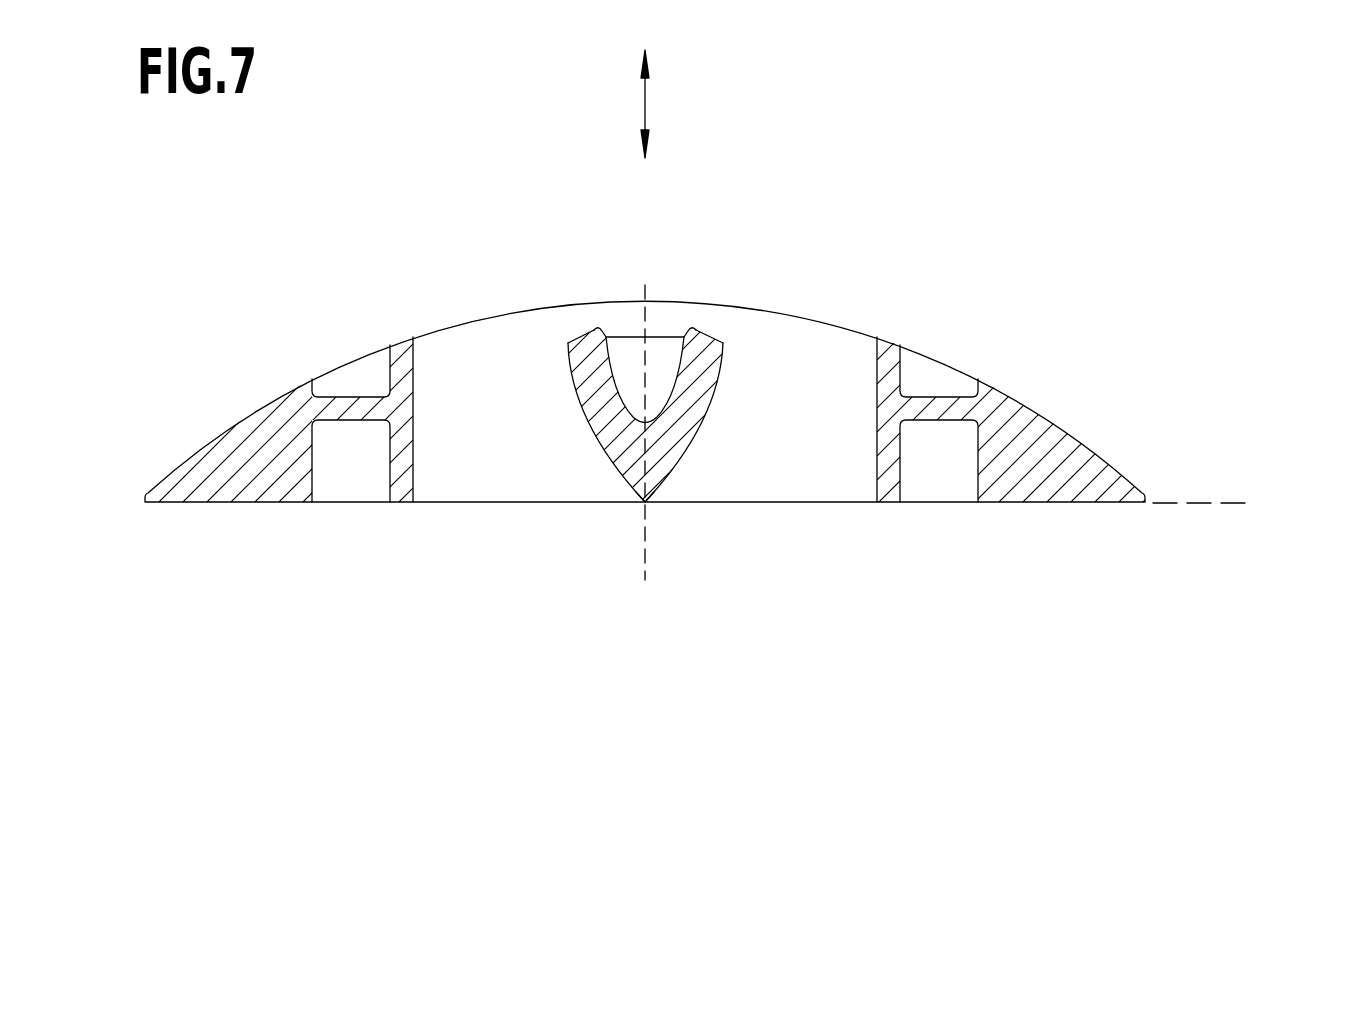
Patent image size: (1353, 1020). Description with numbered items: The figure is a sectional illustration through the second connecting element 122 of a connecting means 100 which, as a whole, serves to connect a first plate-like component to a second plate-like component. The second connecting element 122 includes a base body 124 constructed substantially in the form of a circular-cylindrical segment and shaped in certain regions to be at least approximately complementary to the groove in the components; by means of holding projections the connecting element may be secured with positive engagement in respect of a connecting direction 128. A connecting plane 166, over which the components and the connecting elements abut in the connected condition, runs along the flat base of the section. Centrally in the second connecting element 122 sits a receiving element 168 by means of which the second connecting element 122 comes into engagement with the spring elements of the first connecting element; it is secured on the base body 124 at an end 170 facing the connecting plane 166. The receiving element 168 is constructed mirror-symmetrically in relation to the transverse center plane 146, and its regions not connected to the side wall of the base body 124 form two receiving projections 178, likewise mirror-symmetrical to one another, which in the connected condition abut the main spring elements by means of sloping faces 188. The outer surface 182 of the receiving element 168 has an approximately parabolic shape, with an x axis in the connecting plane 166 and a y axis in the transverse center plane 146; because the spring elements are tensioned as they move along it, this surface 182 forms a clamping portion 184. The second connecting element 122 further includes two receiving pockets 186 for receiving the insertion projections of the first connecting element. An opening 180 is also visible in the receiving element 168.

The connecting means 100 is at (676, 317).
The second connecting element 122 is at (242, 457).
The base body 124 is at (280, 437).
The connecting direction 128 is at (645, 104).
The transverse center plane 146 is at (648, 578).
The connecting plane 166 is at (1198, 505).
The receiving element 168 is at (712, 403).
The end of the receiving element 170 is at (643, 500).
The receiving projections 178 is at (569, 340).
The recess 180 is at (688, 335).
The outer surface 182 is at (649, 364).
The clamping portion 184 is at (594, 440).
The receiving pockets 186 is at (948, 450).
The sloping faces 188 is at (703, 335).